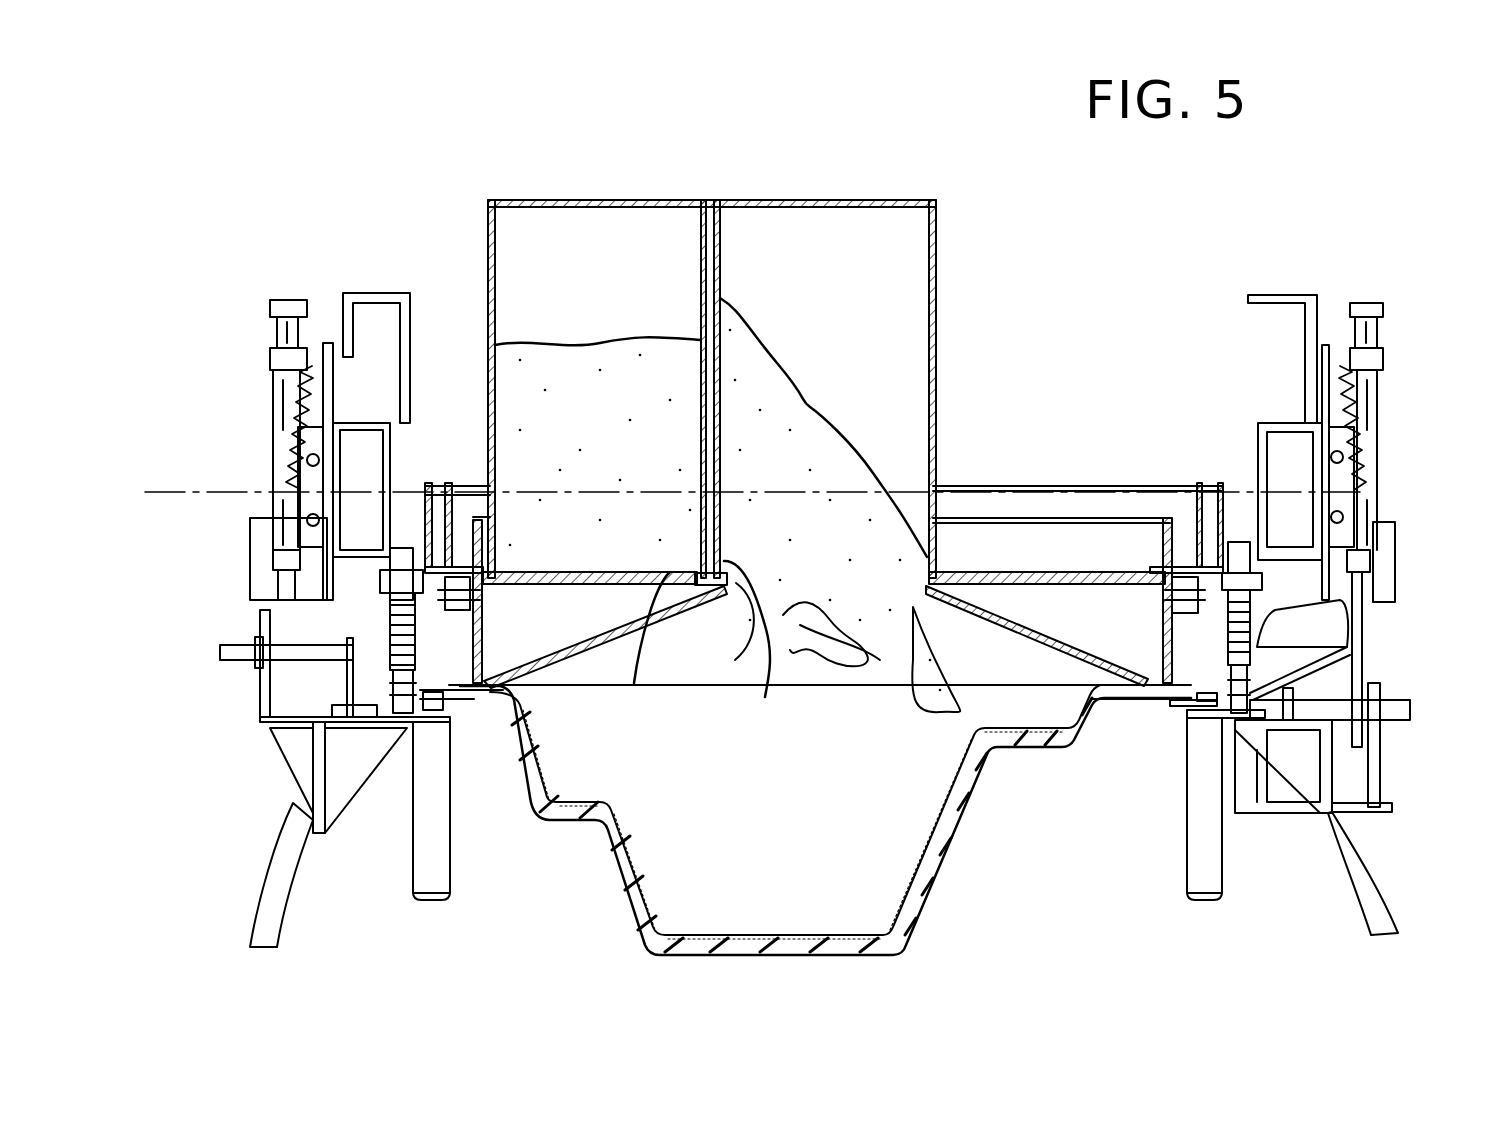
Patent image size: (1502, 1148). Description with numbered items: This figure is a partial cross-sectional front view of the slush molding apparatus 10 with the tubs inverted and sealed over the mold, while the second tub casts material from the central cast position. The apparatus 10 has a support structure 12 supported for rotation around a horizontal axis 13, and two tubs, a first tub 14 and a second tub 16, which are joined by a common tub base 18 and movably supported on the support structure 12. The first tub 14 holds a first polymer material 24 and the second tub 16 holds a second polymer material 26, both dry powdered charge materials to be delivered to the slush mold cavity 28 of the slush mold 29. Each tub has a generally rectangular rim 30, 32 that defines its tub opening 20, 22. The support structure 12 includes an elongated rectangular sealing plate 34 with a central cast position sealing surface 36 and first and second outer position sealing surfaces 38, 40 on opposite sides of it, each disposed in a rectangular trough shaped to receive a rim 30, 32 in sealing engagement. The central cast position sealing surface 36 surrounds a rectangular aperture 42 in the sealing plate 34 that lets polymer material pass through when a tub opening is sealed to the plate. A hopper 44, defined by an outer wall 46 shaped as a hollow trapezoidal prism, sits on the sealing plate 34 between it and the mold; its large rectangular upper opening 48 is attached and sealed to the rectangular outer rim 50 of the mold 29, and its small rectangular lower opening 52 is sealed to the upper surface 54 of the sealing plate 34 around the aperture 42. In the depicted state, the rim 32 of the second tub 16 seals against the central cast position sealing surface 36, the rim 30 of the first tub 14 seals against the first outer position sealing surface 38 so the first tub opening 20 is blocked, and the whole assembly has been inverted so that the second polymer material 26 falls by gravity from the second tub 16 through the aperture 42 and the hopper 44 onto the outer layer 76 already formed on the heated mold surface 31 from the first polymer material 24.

The slush molding apparatus 10 is at (1193, 287).
The support structure 12 is at (1378, 403).
The horizontal axis 13 is at (217, 490).
The first tub 14 is at (487, 270).
The second tub 16 is at (938, 296).
The common tub base 18 is at (712, 200).
The first tub opening 20 is at (690, 595).
The second tub opening 22 is at (768, 590).
The first polymer material 24 is at (560, 365).
The second polymer material 26 is at (863, 533).
The slush mold cavity 28 is at (678, 878).
The slush mold 29 is at (825, 820).
The rim of first tub 30 is at (487, 593).
The mold surface 31 is at (834, 936).
The rim of second tub 32 is at (927, 587).
The sealing plate 34 is at (617, 572).
The central cast position sealing surface 36 is at (933, 560).
The first outer position sealing surface 38 is at (491, 573).
The second outer position sealing surface 40 is at (1150, 560).
The aperture 42 is at (924, 573).
The hopper 44 is at (550, 658).
The outer wall 46 is at (1001, 651).
The upper opening 48 is at (845, 683).
The outer rim 50 is at (465, 688).
The lower opening 52 is at (712, 590).
The upper surface 54 is at (546, 585).
The outer layer 76 is at (752, 936).